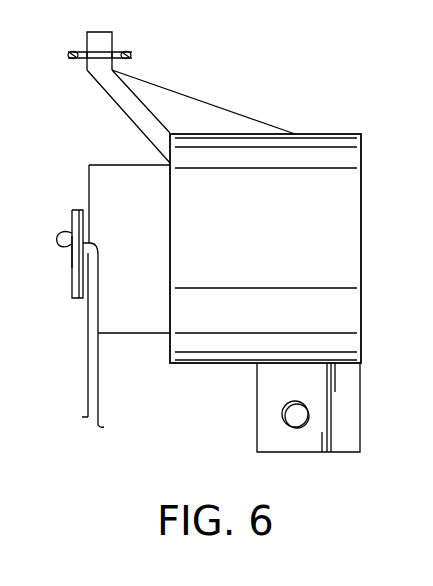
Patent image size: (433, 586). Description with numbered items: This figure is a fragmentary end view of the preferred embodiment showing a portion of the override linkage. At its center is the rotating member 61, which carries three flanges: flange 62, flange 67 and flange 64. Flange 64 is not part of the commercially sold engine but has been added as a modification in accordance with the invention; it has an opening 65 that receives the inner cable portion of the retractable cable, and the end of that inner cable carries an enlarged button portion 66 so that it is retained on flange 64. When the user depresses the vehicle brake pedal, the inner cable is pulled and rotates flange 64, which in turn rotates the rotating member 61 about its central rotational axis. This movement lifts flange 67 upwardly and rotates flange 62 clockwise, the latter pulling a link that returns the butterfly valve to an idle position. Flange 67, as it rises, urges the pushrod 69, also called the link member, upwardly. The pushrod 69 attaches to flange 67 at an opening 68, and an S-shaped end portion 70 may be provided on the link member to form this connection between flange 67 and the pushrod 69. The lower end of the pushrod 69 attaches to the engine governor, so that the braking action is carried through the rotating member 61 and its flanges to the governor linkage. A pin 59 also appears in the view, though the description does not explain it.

The pivot pin 59 is at (127, 53).
The rotating member 61 is at (316, 250).
The flange 62 is at (128, 103).
The flange 64 is at (355, 427).
The opening 65 is at (290, 428).
The enlarged button portion 66 is at (298, 410).
The flange 67 is at (70, 296).
The opening 68 is at (71, 252).
The pushrod 69 is at (97, 397).
The S-shaped end portion 70 is at (62, 248).